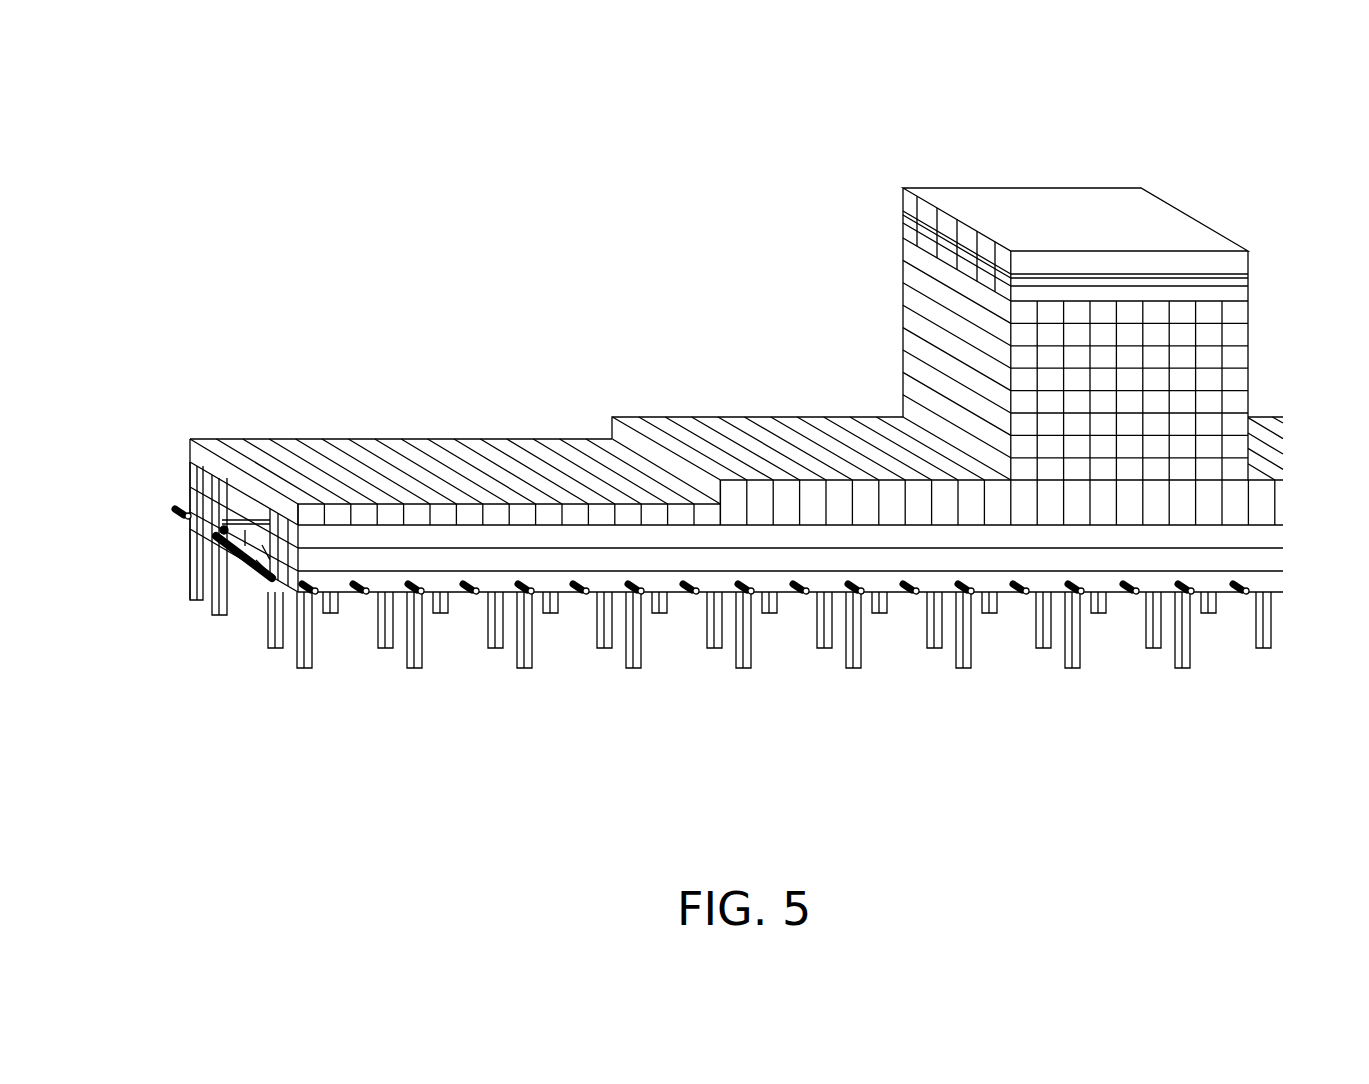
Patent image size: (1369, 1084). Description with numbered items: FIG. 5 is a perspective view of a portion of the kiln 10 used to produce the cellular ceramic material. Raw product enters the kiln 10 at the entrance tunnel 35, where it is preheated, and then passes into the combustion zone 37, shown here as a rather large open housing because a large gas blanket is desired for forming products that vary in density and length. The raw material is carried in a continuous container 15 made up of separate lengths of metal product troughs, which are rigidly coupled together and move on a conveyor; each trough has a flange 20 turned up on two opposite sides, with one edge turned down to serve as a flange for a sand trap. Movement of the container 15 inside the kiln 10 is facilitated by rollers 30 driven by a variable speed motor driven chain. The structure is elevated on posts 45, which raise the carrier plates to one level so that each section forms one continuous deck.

The kiln 10 is at (717, 320).
The continuous container 15 is at (244, 565).
The flange 20 is at (221, 527).
The rollers 30 is at (586, 594).
The entrance tunnel 35 is at (383, 460).
The combustion zone 37 is at (1013, 207).
The posts 45 is at (852, 647).